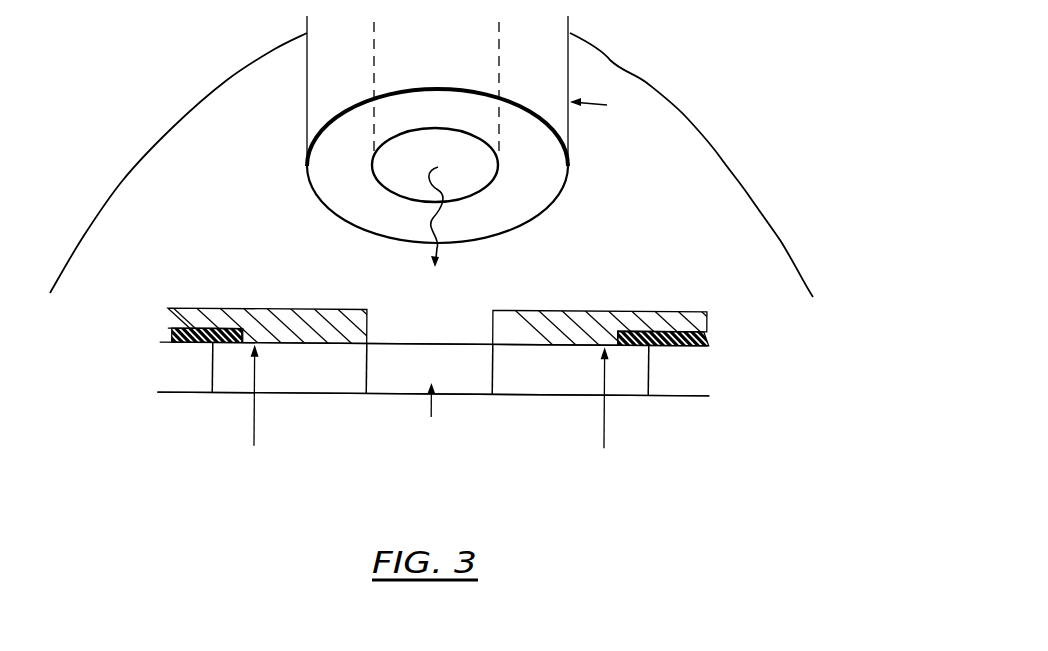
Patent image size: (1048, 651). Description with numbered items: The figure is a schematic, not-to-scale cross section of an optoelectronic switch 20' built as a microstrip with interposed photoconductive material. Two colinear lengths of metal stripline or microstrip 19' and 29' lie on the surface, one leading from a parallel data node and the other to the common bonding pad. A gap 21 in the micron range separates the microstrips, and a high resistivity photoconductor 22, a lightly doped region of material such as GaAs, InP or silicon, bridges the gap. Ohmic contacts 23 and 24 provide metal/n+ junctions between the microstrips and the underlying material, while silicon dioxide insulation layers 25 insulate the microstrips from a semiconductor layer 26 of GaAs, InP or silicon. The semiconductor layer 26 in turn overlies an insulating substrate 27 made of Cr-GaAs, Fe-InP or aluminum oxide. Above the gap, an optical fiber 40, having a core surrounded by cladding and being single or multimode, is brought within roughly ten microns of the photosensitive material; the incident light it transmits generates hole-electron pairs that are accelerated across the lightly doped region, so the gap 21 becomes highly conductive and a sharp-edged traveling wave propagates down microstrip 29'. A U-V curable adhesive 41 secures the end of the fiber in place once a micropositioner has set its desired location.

The microstrip 19' is at (593, 302).
The microstrip 29' is at (620, 307).
The optoelectronic switch 20' is at (559, 324).
The gap 21 is at (461, 344).
The high resistivity photoconductor 22 is at (445, 382).
The ohmic contact 23 is at (352, 381).
The ohmic contact 24 is at (590, 382).
The silicon dioxide insulation layer 25 is at (164, 338).
The semiconductor layer 26 is at (193, 379).
The insulating substrate 27 is at (690, 441).
The optical fiber 40 is at (570, 43).
The U-V curable adhesive 41 is at (687, 118).